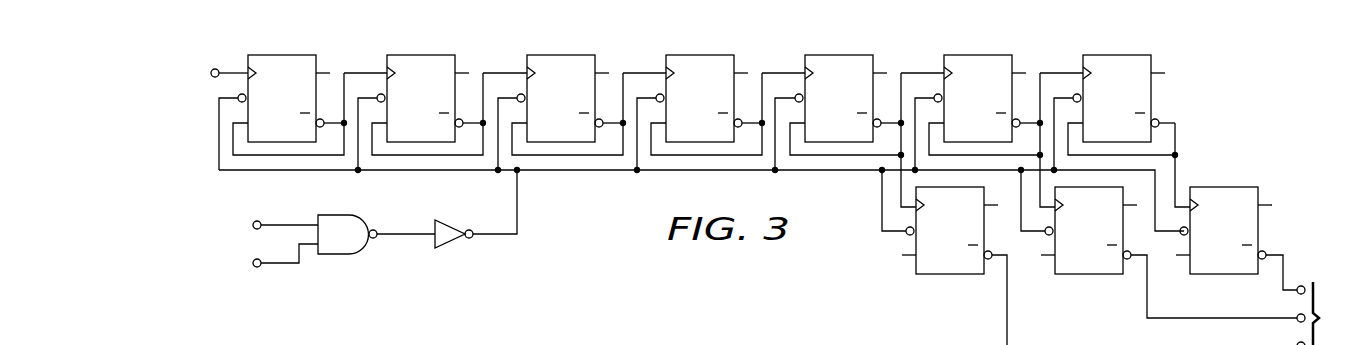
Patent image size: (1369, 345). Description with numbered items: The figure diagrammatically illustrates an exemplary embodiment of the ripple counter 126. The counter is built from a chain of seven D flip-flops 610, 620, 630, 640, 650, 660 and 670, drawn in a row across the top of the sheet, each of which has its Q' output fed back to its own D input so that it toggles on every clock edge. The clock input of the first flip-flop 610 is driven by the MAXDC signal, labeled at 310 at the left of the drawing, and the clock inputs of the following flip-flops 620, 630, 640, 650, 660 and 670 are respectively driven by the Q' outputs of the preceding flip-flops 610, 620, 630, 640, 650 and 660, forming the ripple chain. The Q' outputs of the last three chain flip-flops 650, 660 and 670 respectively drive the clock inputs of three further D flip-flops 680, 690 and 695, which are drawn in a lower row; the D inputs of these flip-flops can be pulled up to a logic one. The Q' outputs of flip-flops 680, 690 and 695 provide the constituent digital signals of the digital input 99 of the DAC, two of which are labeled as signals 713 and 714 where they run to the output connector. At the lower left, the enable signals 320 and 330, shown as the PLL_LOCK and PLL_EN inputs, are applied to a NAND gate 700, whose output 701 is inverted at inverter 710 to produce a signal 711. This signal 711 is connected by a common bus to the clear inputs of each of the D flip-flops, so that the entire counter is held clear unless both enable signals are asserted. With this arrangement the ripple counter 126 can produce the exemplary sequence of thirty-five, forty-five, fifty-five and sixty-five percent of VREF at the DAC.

The ripple counter 126 is at (1272, 69).
The MAXDC input 310 is at (236, 73).
The enable signal 320 is at (280, 225).
The enable signal 330 is at (280, 263).
The D flip-flop 610 is at (282, 55).
The D flip-flop 620 is at (421, 55).
The D flip-flop 630 is at (561, 55).
The D flip-flop 640 is at (700, 55).
The D flip-flop 650 is at (839, 55).
The D flip-flop 660 is at (978, 55).
The D flip-flop 670 is at (1117, 55).
The D flip-flop 680 is at (948, 275).
The D flip-flop 690 is at (1090, 275).
The D flip-flop 695 is at (1223, 187).
The NAND gate 700 is at (343, 255).
The NAND gate output 701 is at (415, 236).
The inverter 710 is at (448, 222).
The clear signal 711 is at (492, 236).
The constituent digital signal 713 is at (1149, 290).
The constituent digital signal 714 is at (1287, 270).
The digital input 99 is at (1320, 298).